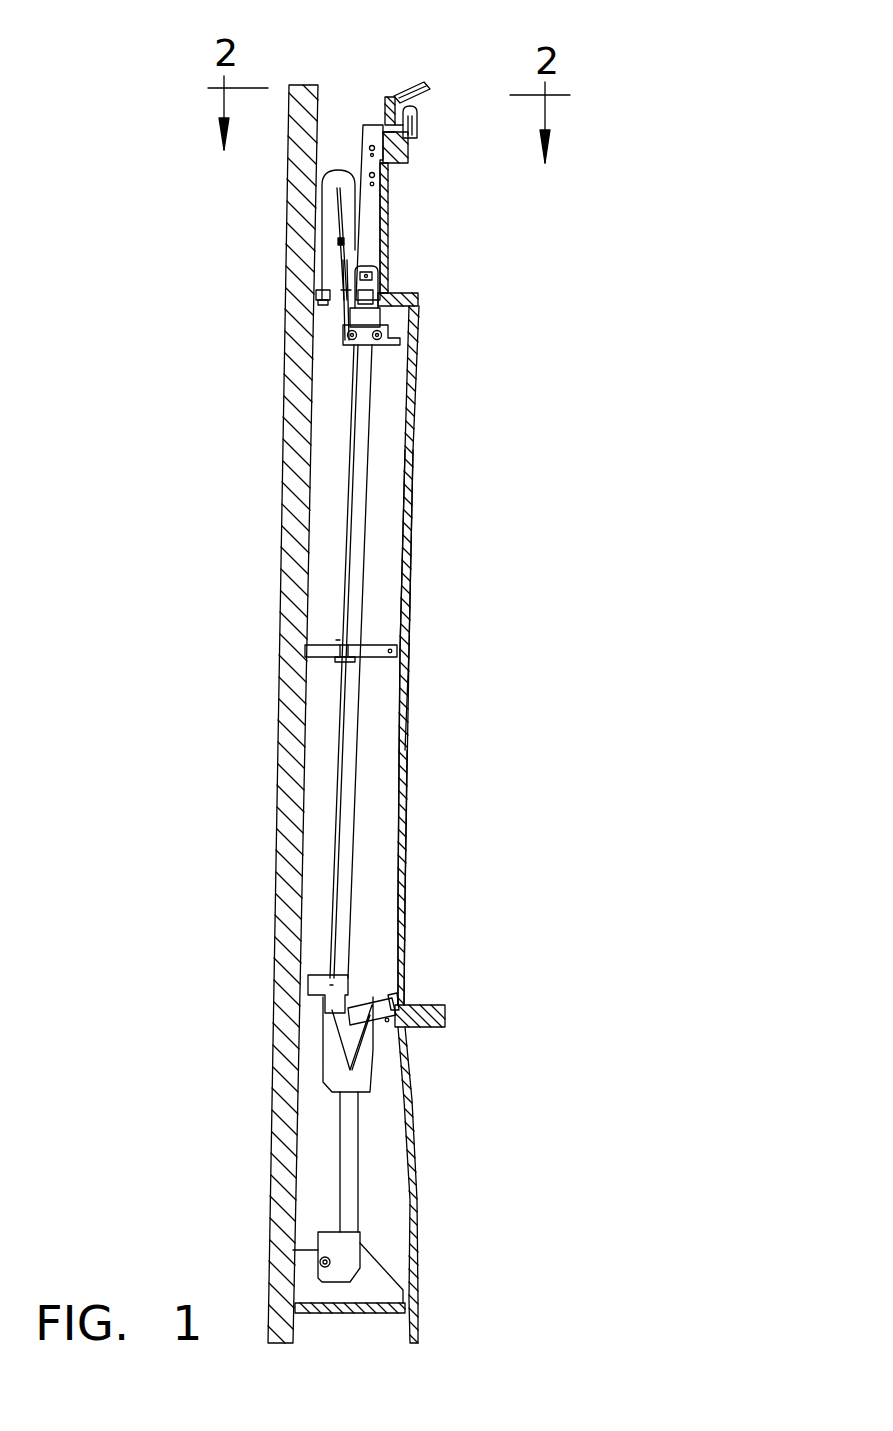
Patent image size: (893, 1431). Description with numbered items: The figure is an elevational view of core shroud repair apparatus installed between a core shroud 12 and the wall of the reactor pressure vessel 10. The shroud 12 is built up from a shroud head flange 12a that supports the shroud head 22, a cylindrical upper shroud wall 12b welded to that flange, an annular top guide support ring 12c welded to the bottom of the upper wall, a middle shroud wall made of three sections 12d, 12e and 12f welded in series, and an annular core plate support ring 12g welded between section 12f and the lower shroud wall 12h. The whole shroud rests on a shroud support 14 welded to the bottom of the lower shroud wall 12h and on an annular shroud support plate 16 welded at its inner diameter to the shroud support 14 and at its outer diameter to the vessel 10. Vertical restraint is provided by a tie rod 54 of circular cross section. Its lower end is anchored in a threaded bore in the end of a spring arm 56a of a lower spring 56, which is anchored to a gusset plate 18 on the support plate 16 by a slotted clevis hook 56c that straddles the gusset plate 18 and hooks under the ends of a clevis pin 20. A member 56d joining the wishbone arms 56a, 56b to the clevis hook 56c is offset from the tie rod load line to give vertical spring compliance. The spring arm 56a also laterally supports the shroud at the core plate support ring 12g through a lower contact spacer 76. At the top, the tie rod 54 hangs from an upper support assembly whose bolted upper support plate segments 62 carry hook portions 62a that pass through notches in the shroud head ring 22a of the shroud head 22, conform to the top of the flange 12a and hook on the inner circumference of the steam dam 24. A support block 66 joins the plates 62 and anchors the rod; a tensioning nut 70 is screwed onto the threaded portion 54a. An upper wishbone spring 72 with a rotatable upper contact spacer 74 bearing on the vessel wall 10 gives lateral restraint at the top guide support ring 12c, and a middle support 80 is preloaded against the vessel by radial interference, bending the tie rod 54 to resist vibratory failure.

The reactor pressure vessel 10 is at (290, 558).
The core shroud 12 is at (465, 737).
The shroud head flange 12a is at (410, 150).
The upper shroud wall 12b is at (390, 217).
The top guide support ring 12c is at (402, 293).
The middle shroud wall section 12d is at (416, 452).
The middle shroud wall section 12e is at (413, 577).
The middle shroud wall section 12f is at (413, 863).
The core plate support ring 12g is at (430, 1027).
The lower shroud wall 12h is at (415, 1173).
The shroud support 14 is at (418, 1268).
The shroud support plate 16 is at (328, 1310).
The gusset plate 18 is at (307, 1250).
The clevis pin 20 is at (317, 1262).
The shroud head 22 is at (403, 73).
The shroud head ring 22a is at (385, 105).
The steam dam 24 is at (410, 135).
The tie rod 54 is at (335, 822).
The threaded portion 54a is at (350, 300).
The lower spring 56 is at (343, 1137).
The spring arm 56a is at (325, 1053).
The upper wishbone spring arm 56b is at (385, 1060).
The clevis hook 56c is at (352, 1238).
The connecting member 56d is at (353, 1138).
The upper support plate segment 62 is at (362, 147).
The hook portion 62a is at (413, 122).
The support block 66 is at (393, 345).
The tensioning nut 70 is at (375, 317).
The upper spring 72 is at (328, 183).
The upper contact spacer 74 is at (340, 304).
The lower contact spacer 76 is at (317, 978).
The middle support 80 is at (380, 640).